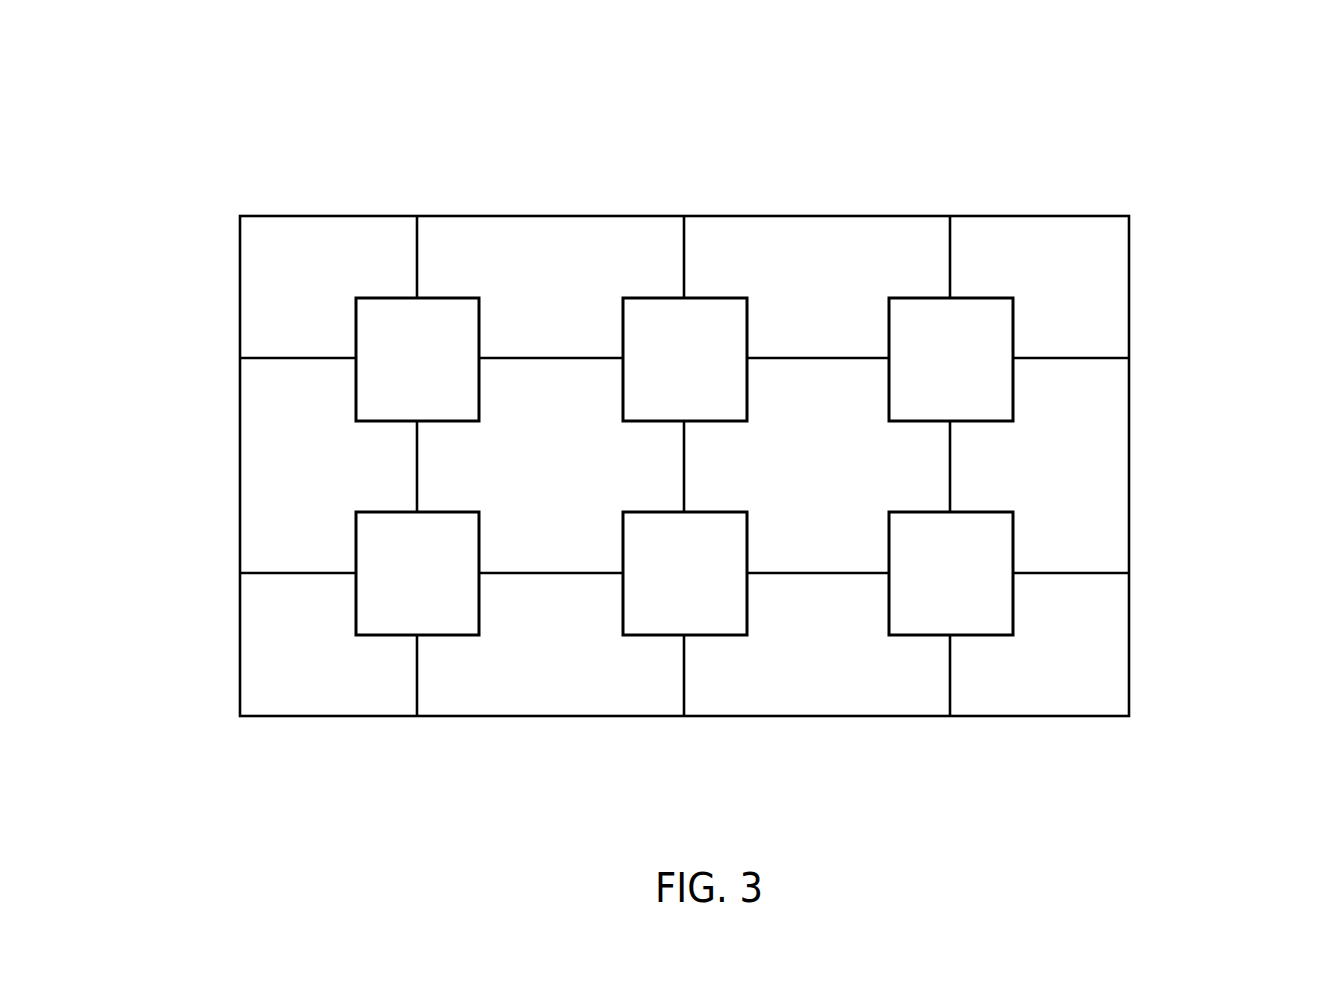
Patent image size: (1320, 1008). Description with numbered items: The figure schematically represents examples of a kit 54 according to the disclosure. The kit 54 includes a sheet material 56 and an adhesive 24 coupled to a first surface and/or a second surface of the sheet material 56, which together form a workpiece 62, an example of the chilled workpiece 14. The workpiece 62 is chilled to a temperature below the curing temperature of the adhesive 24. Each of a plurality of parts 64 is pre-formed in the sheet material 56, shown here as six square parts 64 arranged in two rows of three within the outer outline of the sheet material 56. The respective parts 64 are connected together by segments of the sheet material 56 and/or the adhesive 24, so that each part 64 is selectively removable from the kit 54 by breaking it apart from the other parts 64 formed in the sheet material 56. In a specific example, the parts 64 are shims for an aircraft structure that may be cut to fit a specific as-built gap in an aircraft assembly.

The kit 54 is at (1222, 110).
The chilled workpiece 14 is at (748, 440).
The workpiece 62 is at (1162, 245).
The sheet material 56 is at (363, 365).
The adhesive 24 is at (950, 465).
The parts 64 is at (623, 388).